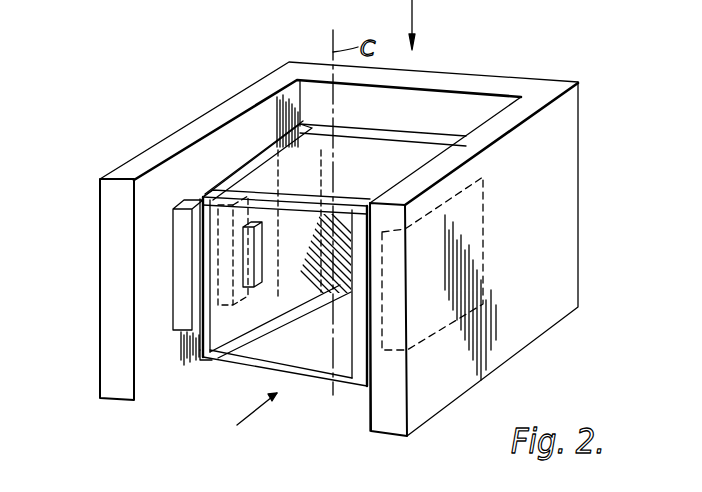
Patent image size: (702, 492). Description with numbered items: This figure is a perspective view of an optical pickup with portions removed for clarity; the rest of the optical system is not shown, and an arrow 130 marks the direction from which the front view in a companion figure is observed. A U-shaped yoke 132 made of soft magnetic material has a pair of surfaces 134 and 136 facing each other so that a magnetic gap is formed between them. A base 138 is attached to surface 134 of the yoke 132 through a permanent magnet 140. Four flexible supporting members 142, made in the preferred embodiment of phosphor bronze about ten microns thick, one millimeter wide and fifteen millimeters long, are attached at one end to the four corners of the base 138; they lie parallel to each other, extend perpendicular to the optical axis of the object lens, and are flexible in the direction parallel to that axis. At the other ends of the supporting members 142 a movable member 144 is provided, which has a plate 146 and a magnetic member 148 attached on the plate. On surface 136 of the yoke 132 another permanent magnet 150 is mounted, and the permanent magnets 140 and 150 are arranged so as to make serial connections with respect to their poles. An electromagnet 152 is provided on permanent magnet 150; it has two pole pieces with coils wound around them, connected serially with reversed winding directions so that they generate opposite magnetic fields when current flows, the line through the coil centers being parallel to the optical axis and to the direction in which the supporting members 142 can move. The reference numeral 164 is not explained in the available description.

The arrow 130 is at (255, 412).
The U-shaped yoke 132 is at (548, 88).
The surface 134 is at (371, 403).
The surface 136 is at (148, 363).
The base 138 is at (367, 360).
The permanent magnet 140 is at (452, 262).
The flexible supporting members 142 is at (421, 135).
The movable member 144 is at (195, 358).
The plate 146 is at (284, 152).
The magnetic member 148 is at (269, 261).
The permanent magnet 150 is at (197, 236).
The electromagnet 152 is at (213, 239).
The insertion direction arrow 164 is at (412, 15).